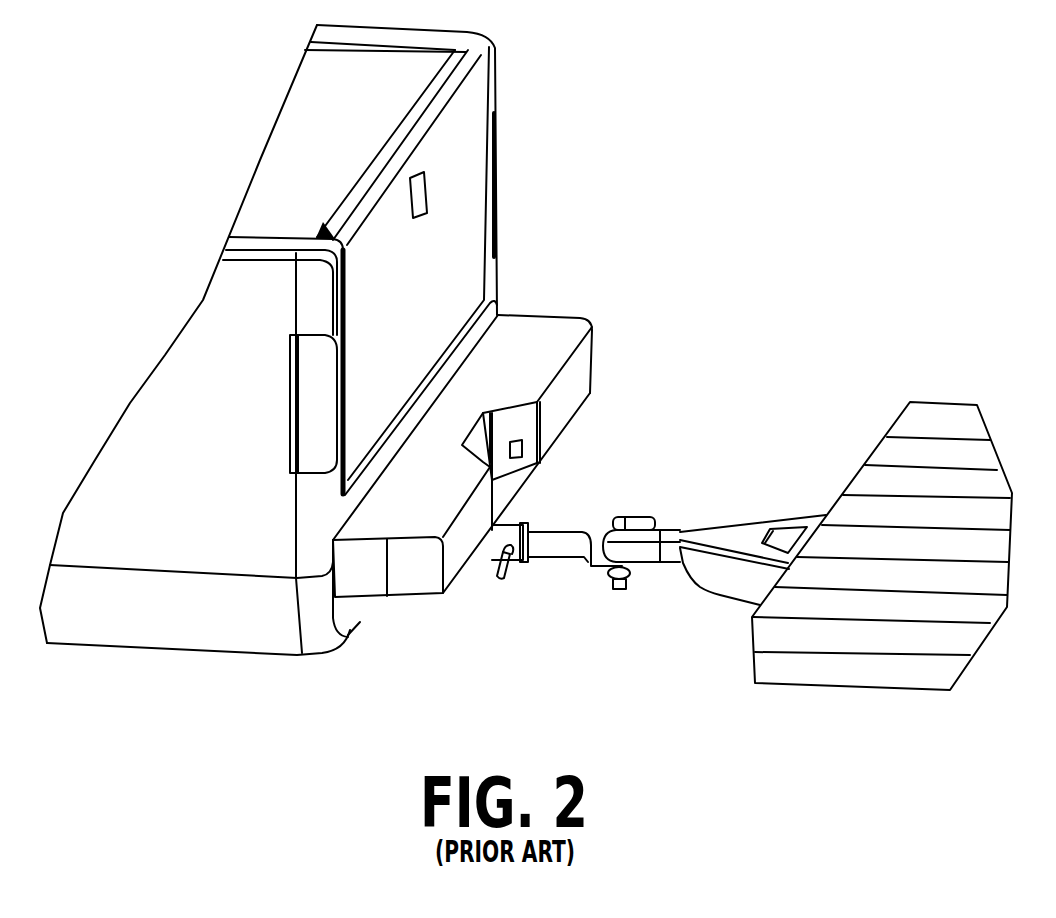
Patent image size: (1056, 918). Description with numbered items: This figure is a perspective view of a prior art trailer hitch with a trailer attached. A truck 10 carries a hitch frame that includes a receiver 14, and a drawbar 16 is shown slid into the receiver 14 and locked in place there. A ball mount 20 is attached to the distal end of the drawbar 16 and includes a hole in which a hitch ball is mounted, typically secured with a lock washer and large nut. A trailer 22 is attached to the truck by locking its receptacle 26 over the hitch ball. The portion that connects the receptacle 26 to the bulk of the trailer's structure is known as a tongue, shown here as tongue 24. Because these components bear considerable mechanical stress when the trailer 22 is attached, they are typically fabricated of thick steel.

The truck 10 is at (537, 195).
The receiver 14 is at (528, 526).
The drawbar 16 is at (537, 560).
The ball mount 20 is at (600, 577).
The trailer 22 is at (958, 372).
The tongue 24 is at (745, 528).
The receptacle 26 is at (635, 518).